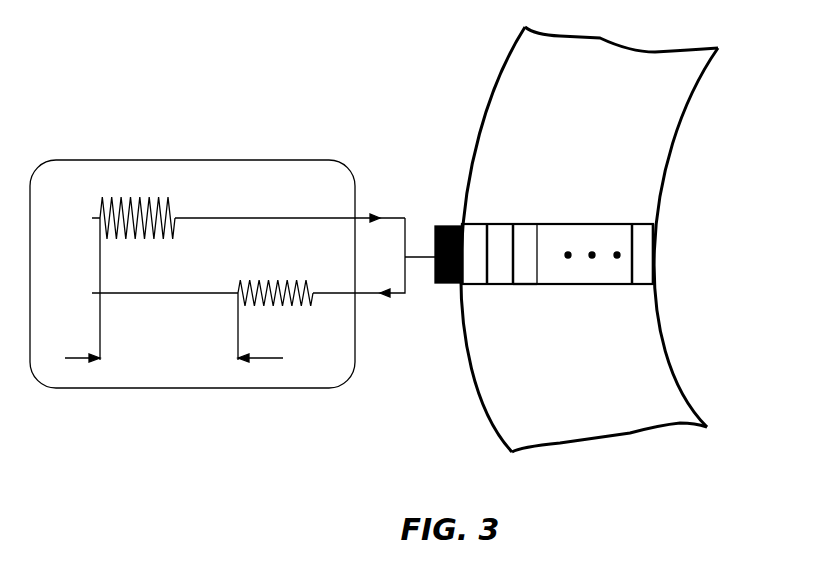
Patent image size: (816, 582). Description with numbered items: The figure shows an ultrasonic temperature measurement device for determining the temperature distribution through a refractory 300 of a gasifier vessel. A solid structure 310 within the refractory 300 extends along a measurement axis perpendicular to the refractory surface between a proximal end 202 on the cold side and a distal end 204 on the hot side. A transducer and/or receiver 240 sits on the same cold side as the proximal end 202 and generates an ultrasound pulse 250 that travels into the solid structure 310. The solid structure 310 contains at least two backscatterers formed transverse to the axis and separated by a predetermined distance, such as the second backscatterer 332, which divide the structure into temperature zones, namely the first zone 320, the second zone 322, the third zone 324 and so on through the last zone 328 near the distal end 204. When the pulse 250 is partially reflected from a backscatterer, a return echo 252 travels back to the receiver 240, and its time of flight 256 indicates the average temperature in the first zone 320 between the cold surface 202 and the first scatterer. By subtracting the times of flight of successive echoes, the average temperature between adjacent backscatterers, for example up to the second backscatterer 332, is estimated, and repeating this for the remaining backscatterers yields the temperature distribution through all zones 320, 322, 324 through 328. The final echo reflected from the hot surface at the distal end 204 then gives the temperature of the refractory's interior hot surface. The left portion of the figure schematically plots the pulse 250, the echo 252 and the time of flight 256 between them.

The proximal end 202 is at (462, 228).
The distal end 204 is at (657, 258).
The transducer and/or receiver 240 is at (444, 283).
The ultrasound pulse 250 is at (137, 200).
The return echo 252 is at (272, 283).
The time of flight 256 is at (171, 359).
The refractory 300 is at (589, 239).
The solid structure 310 is at (588, 224).
The first zone 320 is at (473, 232).
The second zone 322 is at (497, 286).
The third zone 324 is at (520, 226).
The last zone 328 is at (645, 270).
The second backscatterer 332 is at (513, 287).